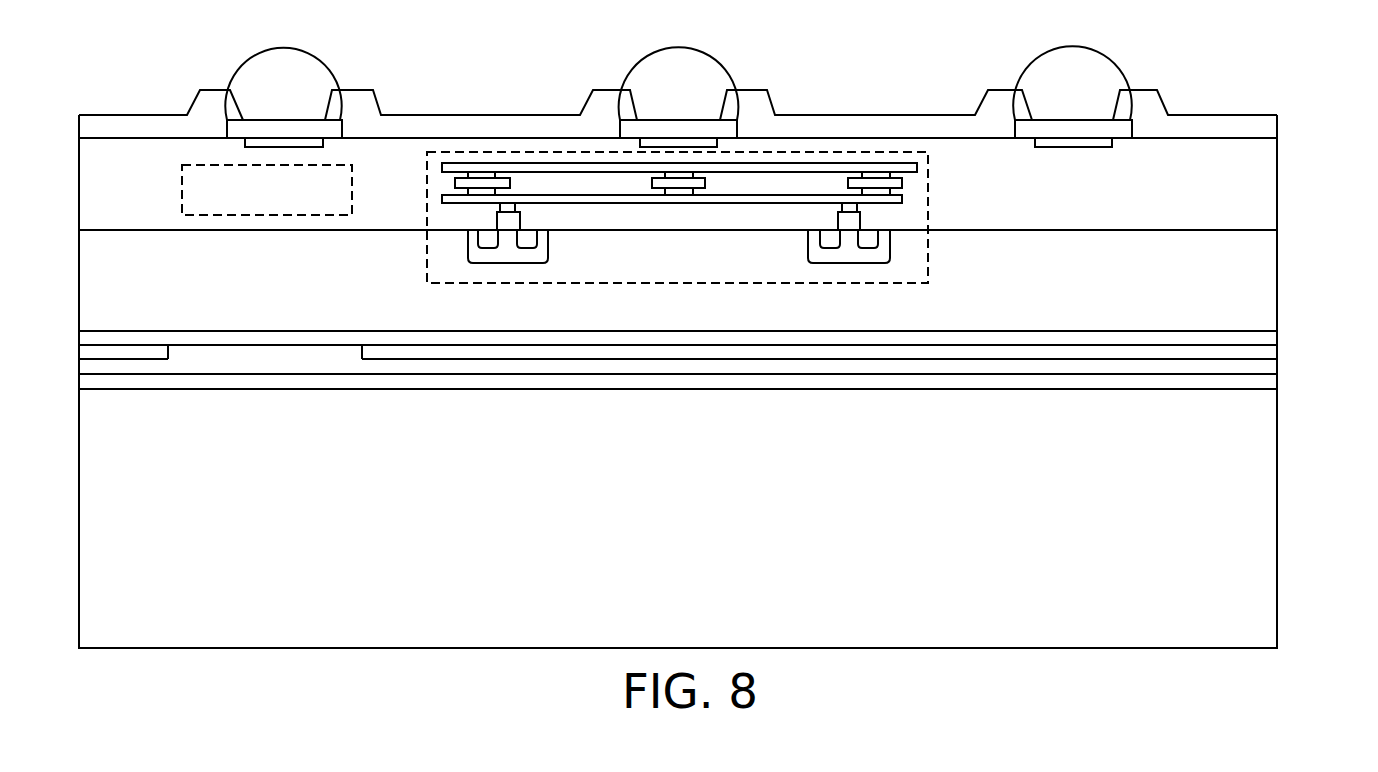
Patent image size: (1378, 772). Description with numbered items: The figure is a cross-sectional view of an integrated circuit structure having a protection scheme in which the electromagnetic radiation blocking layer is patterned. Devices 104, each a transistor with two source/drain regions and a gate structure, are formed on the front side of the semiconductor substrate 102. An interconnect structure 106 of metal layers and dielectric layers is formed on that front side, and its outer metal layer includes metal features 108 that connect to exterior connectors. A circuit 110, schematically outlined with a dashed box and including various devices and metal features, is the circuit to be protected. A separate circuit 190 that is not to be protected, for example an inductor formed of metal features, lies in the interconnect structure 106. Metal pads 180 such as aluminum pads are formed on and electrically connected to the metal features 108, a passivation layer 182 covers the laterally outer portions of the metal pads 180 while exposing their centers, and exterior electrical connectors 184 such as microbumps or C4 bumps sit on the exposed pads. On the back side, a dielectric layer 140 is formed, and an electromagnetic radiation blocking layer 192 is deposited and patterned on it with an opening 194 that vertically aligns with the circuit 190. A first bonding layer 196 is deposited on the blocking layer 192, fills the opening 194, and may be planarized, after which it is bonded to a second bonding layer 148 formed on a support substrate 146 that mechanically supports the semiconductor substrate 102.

The semiconductor substrate 102 is at (1227, 289).
The devices 104 is at (567, 265).
The interconnect structure 106 is at (1270, 183).
The metal features 108 is at (322, 143).
The circuit 110 is at (928, 260).
The dielectric layer 140 is at (1277, 338).
The support substrate 146 is at (1227, 620).
The second bonding layer 148 is at (1279, 385).
The metal pads 180 is at (343, 128).
The passivation layer 182 is at (1270, 127).
The exterior electrical connectors 184 is at (306, 98).
The circuit 190 is at (280, 202).
The electromagnetic radiation blocking layer 192 is at (1279, 350).
The opening 194 is at (262, 375).
The first bonding layer 196 is at (1279, 368).